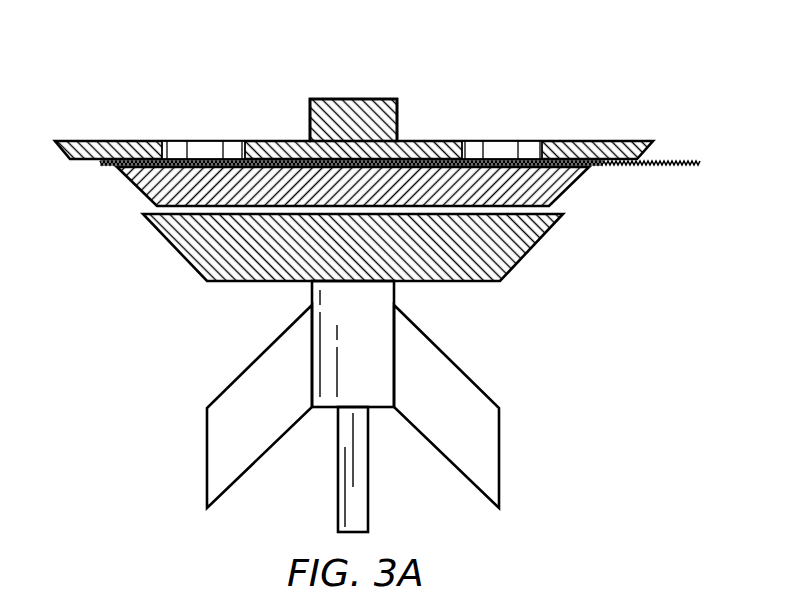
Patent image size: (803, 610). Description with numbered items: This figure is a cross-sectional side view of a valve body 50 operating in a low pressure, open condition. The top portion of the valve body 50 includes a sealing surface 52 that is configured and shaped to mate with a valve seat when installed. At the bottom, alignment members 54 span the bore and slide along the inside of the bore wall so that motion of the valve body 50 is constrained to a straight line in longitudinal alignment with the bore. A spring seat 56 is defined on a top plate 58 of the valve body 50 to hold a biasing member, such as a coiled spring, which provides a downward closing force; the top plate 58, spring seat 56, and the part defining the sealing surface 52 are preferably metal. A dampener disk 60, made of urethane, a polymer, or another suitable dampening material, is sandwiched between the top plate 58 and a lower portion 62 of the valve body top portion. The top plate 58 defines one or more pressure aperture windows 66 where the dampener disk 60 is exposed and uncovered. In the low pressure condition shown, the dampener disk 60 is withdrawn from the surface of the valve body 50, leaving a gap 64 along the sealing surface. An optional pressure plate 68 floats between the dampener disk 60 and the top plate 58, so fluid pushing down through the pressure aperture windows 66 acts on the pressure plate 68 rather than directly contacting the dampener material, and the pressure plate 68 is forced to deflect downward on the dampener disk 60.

The valve body 50 is at (599, 54).
The sealing surface 52 is at (180, 255).
The alignment members 54 is at (181, 531).
The spring seat 56 is at (422, 96).
The top plate 58 is at (112, 141).
The dampener disk 60 is at (570, 187).
The lower portion 62 is at (128, 320).
The gap 64 is at (143, 213).
The pressure aperture windows 66 is at (200, 140).
The pressure plate 68 is at (499, 159).